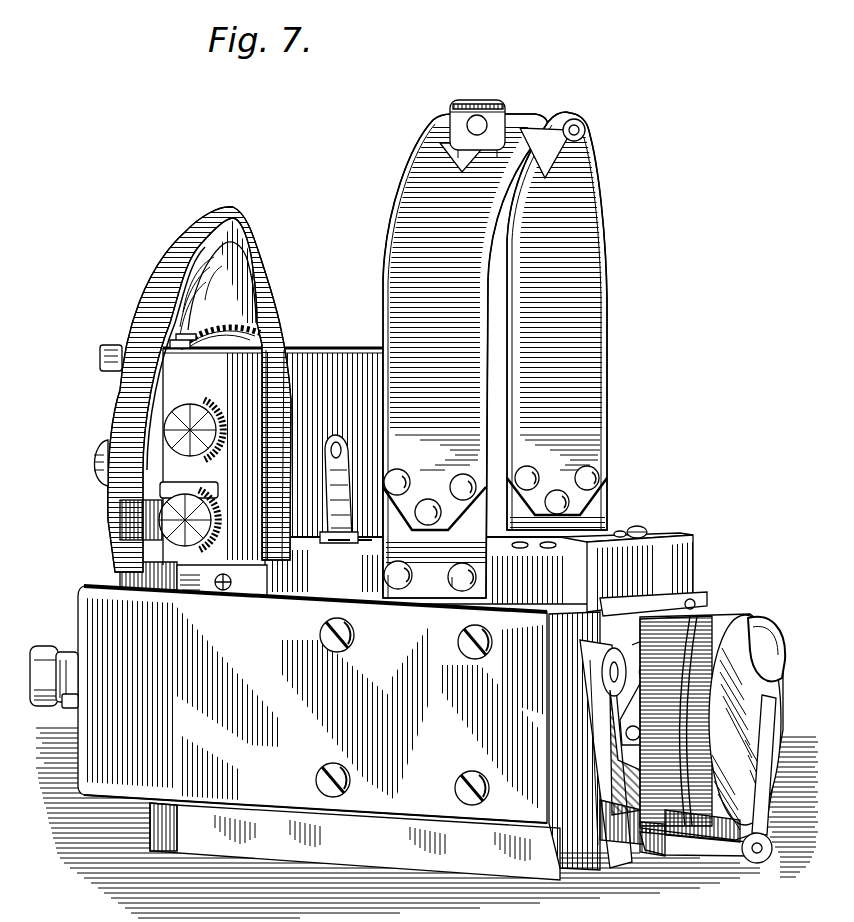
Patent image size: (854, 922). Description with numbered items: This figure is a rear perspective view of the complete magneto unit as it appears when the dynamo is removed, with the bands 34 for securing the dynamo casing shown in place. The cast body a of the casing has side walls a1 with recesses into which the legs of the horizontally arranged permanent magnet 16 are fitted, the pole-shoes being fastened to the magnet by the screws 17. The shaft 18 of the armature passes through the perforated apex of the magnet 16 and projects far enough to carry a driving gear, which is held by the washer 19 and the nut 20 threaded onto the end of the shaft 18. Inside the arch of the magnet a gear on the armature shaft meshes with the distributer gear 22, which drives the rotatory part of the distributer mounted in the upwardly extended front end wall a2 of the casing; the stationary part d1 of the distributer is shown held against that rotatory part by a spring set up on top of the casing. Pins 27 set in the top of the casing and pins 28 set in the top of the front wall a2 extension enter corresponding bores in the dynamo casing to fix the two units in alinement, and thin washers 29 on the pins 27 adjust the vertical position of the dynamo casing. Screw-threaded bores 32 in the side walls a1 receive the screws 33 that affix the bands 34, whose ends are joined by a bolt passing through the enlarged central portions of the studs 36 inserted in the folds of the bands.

The permanent magnet 16 is at (312, 704).
The screws 17 is at (508, 800).
The armature shaft 18 is at (76, 668).
The washer 19 is at (66, 708).
The nut 20 is at (58, 648).
The distributer gear 22 is at (221, 337).
The pins 27 is at (340, 535).
The pins 28 is at (275, 347).
The thin washers 29 is at (362, 545).
The screw-threaded bores 32 is at (340, 478).
The screws 33 is at (440, 580).
The bands 34 is at (495, 349).
The studs 36 is at (575, 118).
The body of the casing a is at (633, 574).
The side walls a1 is at (355, 717).
The front end wall a2 is at (192, 529).
The stationary part of the distributer d1 is at (235, 397).